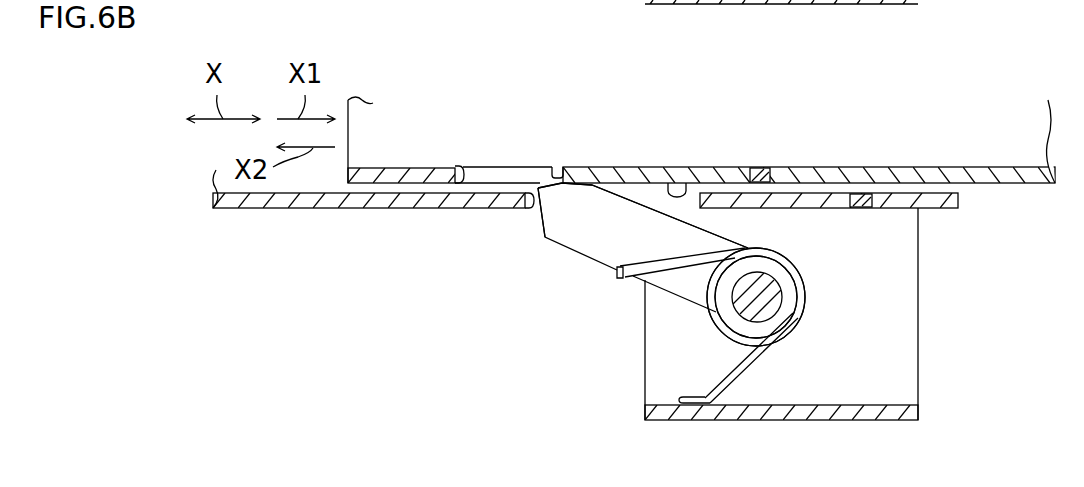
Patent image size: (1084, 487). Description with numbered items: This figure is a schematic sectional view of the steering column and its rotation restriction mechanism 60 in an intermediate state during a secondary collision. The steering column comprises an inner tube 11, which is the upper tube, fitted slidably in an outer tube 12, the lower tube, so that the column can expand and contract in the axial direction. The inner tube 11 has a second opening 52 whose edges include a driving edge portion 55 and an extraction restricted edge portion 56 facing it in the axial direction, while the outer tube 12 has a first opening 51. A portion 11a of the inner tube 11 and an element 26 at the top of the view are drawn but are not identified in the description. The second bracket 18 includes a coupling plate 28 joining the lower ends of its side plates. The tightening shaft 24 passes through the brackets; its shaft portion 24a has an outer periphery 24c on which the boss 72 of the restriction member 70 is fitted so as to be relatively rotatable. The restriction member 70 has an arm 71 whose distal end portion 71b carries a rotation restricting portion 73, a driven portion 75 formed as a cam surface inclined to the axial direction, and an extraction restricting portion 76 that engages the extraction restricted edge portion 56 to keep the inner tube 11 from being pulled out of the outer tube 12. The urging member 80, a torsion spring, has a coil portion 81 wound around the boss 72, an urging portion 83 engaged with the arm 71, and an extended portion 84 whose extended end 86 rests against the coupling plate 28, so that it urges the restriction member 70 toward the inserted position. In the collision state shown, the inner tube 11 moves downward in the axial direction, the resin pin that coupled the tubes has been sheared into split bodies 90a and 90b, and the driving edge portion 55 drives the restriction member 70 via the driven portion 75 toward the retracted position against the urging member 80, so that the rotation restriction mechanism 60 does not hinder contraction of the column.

The inner tube 11 is at (809, 179).
The engaging hook portion 11a is at (685, 182).
The outer tube 12 is at (373, 226).
The second bracket 18 is at (823, 319).
The tightening shaft 24 is at (752, 305).
The shaft portion 24a is at (772, 308).
The outer periphery of the shaft portion 24c is at (720, 313).
The upper member 26 is at (933, 2).
The coupling plate 28 is at (913, 410).
The first opening 51 is at (530, 207).
The second opening 52 is at (450, 128).
The driving edge portion 55 is at (557, 162).
The extraction restricted edge portion 56 is at (460, 167).
The rotation restriction mechanism 60 is at (668, 306).
The restriction member 70 is at (597, 210).
The arm 71 is at (597, 186).
The distal end portion 71b is at (540, 187).
The rotation restricting portion 73 is at (592, 202).
The driven portion 75 is at (643, 202).
The extraction restricting portion 76 is at (495, 233).
The boss 72 is at (838, 230).
The urging member 80 is at (744, 326).
The coil portion 81 is at (800, 293).
The urging portion 83 is at (618, 275).
The extended portion 84 is at (725, 359).
The extended end 86 is at (687, 398).
The split body 90a is at (760, 167).
The split body 90b is at (860, 207).